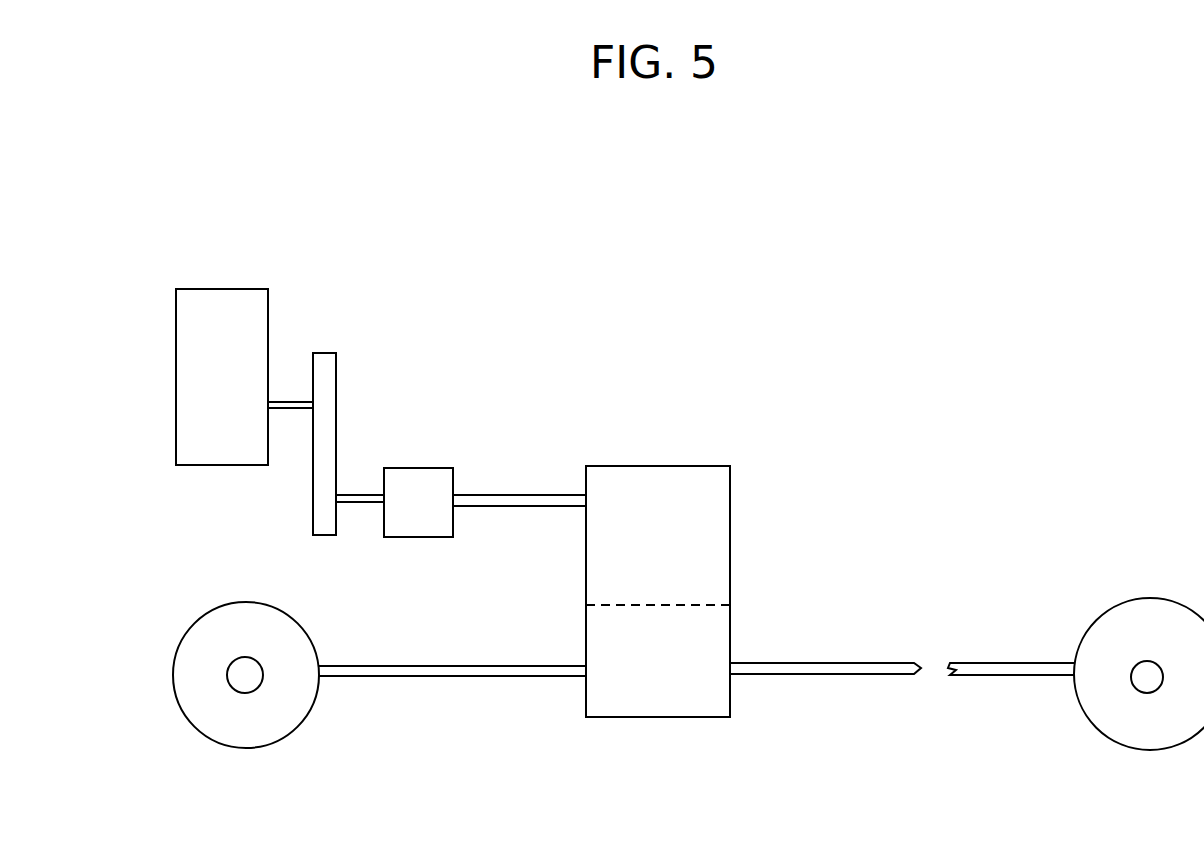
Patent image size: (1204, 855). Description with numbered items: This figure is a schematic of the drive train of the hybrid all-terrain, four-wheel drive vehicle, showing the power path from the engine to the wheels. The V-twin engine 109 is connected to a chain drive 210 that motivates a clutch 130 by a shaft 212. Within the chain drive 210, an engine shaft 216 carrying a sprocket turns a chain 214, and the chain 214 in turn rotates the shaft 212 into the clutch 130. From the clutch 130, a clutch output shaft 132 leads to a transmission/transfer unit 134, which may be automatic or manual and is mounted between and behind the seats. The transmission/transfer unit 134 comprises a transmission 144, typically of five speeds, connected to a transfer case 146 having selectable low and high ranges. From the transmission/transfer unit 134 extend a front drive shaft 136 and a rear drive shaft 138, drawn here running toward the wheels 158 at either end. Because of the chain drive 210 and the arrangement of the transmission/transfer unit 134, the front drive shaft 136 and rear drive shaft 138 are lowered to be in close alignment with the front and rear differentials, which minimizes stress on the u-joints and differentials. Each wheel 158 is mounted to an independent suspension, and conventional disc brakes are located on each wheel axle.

The V-twin engine 109 is at (189, 289).
The chain drive 210 is at (410, 315).
The engine shaft 216 is at (275, 398).
The chain 214 is at (313, 467).
The shaft 212 is at (353, 500).
The clutch 130 is at (398, 468).
The clutch output shaft 132 is at (558, 493).
The transmission/transfer unit 134 is at (757, 430).
The transmission 144 is at (730, 537).
The transfer case 146 is at (702, 717).
The rear drive shaft 138 is at (533, 677).
The front drive shaft 136 is at (882, 673).
The wheel 158 is at (313, 703).